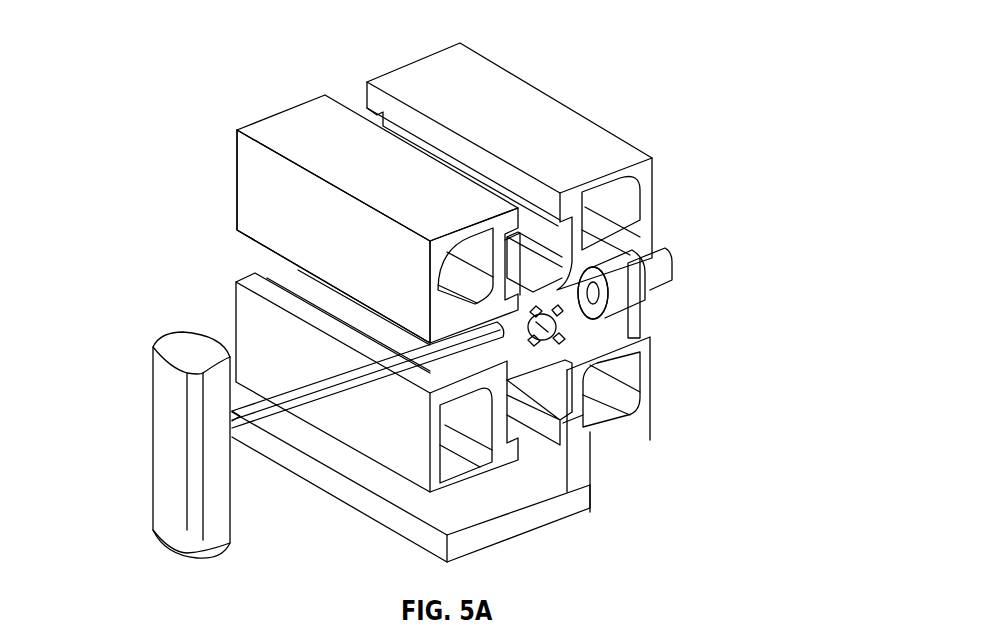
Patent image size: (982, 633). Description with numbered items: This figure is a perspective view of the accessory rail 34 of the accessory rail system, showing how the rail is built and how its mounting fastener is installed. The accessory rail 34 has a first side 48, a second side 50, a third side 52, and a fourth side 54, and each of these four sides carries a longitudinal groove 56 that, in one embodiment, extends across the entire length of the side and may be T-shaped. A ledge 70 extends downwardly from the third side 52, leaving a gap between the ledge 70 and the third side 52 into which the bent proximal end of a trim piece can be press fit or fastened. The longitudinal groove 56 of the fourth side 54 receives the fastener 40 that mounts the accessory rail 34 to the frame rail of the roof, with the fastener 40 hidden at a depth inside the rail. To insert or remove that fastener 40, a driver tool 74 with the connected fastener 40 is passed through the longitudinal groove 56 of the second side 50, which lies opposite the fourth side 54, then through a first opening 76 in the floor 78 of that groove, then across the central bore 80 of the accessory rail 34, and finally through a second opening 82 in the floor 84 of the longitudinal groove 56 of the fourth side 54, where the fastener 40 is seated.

The accessory rail 34 is at (590, 27).
The fastener 40 is at (668, 258).
The first side 48 is at (264, 130).
The second side 50 is at (234, 152).
The third side 52 is at (636, 418).
The fourth side 54 is at (656, 172).
The longitudinal groove 56 is at (377, 115).
The ledge 70 is at (516, 525).
The driver tool 74 is at (164, 461).
The first opening 76 is at (562, 428).
The floor 78 is at (487, 326).
The central bore 80 is at (655, 405).
The second opening 82 is at (560, 336).
The floor 84 is at (630, 265).